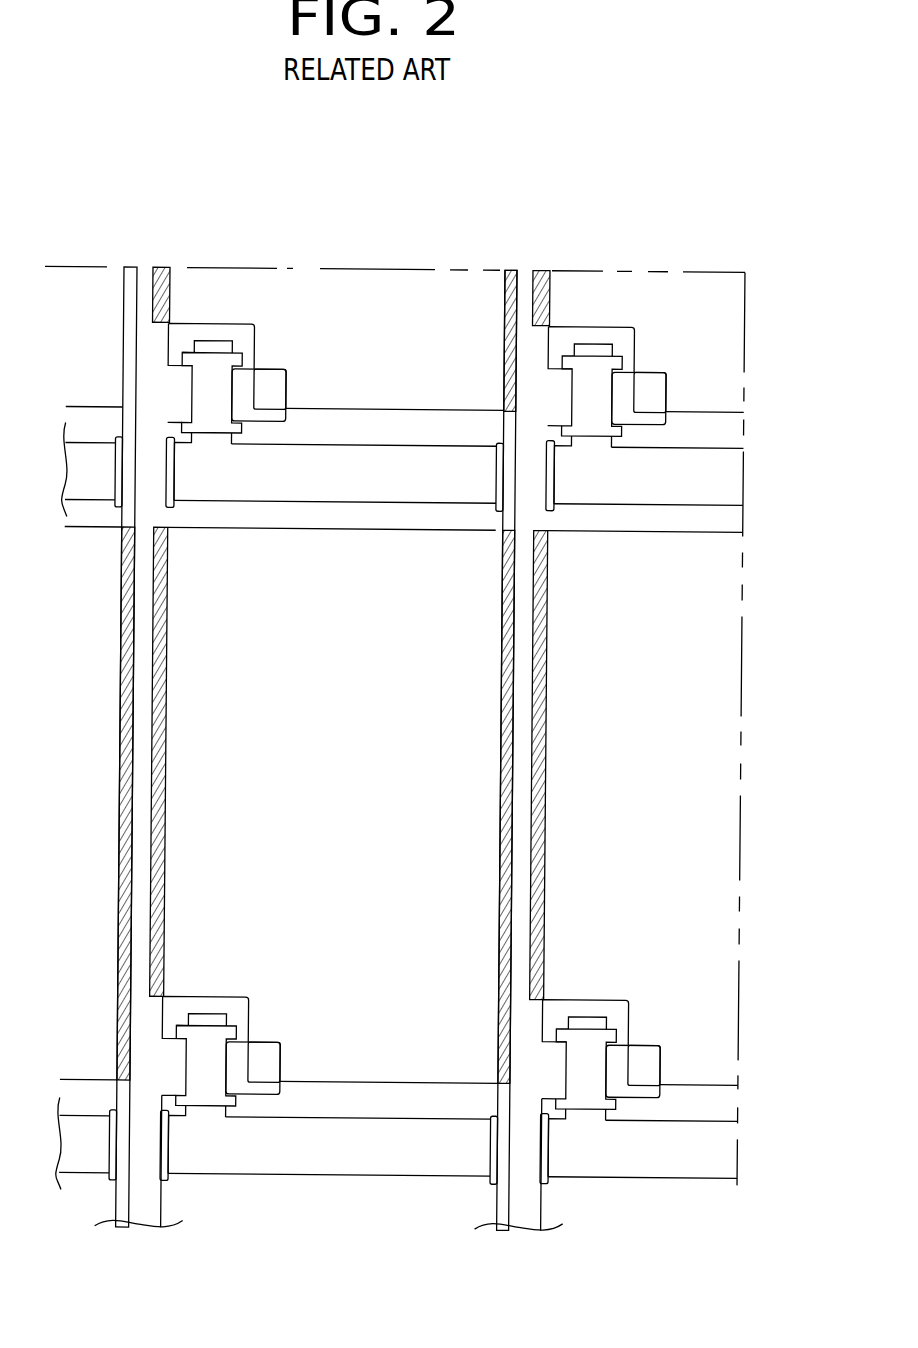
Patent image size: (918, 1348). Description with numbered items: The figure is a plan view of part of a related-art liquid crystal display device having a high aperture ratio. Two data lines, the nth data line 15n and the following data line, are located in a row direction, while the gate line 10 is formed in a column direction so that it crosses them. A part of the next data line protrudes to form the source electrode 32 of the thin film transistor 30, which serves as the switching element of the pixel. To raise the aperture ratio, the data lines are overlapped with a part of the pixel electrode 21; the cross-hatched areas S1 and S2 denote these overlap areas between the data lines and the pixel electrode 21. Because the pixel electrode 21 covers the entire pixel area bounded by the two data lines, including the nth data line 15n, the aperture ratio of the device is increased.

The gate line 10 is at (350, 1140).
The nth data line 15n is at (142, 947).
The pixel electrode 21 is at (415, 1055).
The thin film transistor 30 is at (214, 1068).
The source electrode 32 is at (180, 1073).
The overlap area S1 is at (170, 722).
The overlap area S2 is at (503, 726).